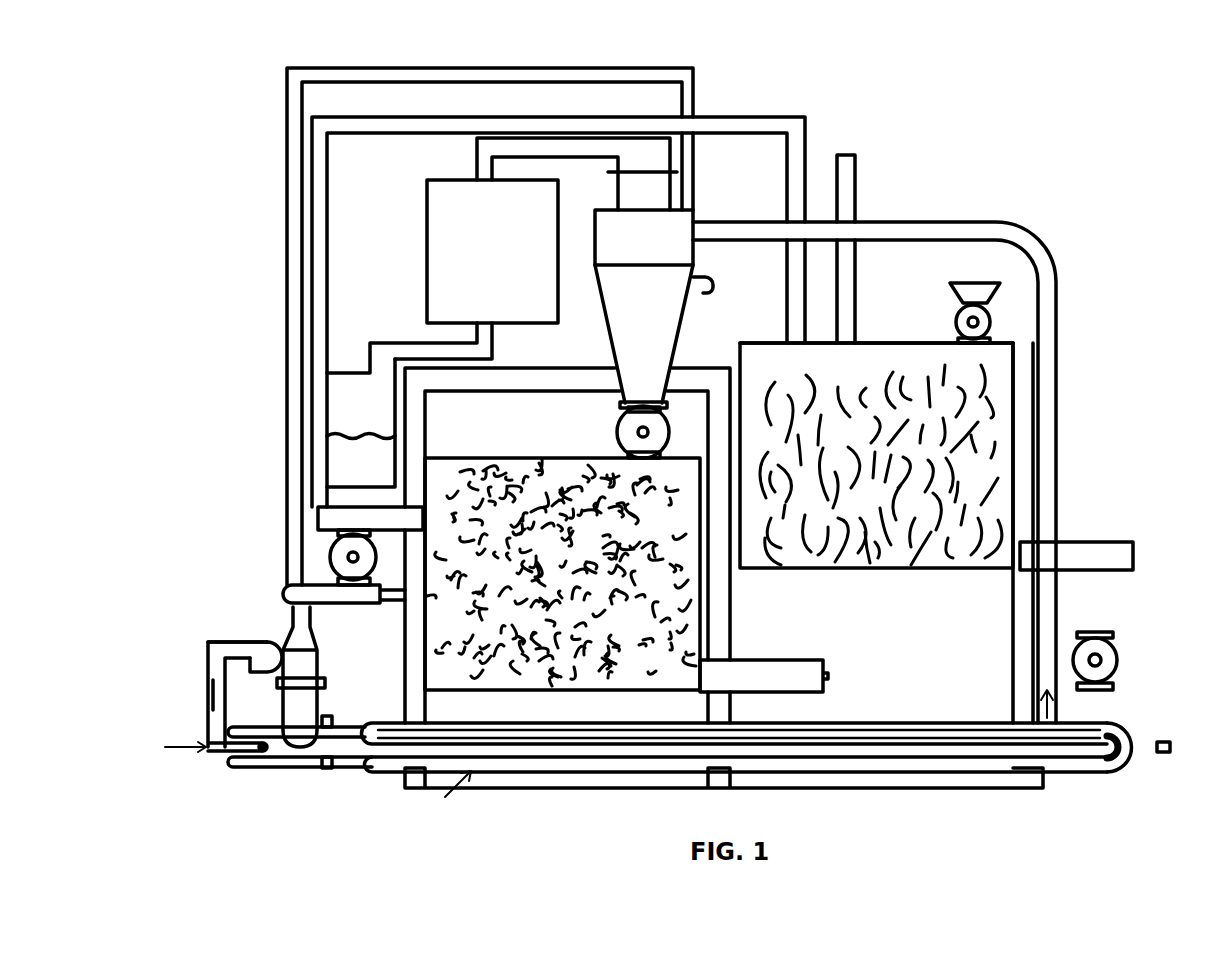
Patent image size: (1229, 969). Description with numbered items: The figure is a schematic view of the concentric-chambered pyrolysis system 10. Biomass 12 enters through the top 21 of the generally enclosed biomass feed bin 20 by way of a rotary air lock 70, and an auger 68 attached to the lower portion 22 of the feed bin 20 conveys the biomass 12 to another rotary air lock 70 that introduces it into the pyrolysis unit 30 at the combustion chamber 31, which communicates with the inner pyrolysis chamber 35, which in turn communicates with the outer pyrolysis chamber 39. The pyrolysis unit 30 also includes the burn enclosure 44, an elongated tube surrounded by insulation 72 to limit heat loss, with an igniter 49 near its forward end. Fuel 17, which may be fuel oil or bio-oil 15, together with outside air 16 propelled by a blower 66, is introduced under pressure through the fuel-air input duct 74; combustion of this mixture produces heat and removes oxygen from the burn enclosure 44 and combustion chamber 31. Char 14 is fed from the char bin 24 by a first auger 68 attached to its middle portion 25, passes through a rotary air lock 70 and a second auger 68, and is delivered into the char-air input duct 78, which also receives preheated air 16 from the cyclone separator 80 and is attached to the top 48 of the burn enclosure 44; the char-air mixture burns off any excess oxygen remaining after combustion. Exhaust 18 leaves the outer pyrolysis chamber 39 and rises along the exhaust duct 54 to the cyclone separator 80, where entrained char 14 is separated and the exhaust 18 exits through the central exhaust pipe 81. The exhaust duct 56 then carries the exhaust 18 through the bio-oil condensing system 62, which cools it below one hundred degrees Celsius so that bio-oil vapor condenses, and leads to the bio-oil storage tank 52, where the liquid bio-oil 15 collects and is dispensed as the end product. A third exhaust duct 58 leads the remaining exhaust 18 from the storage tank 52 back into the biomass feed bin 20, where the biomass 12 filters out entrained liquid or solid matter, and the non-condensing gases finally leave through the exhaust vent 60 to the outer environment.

The concentric-chambered pyrolysis system 10 is at (1002, 158).
The biomass 12 is at (862, 548).
The char 14 is at (618, 608).
The bio-oil 15 is at (327, 452).
The air 16 is at (208, 702).
The fuel 17 is at (182, 752).
The exhaust 18 is at (1032, 680).
The biomass feed bin 20 is at (997, 367).
The top of the feed bin 21 is at (878, 340).
The lower portion of the biomass feed bin 22 is at (1015, 525).
The char bin 24 is at (476, 468).
The middle portion of the char bin 25 is at (422, 607).
The pyrolysis unit 30 is at (441, 805).
The combustion chamber 31 is at (822, 745).
The inner pyrolysis chamber 35 is at (862, 740).
The outer pyrolysis chamber 39 is at (940, 735).
The burn enclosure 44 is at (318, 755).
The top of the burn enclosure 48 is at (333, 722).
The igniter 49 is at (261, 752).
The bio-oil storage tank 52 is at (368, 412).
The exhaust duct 54 is at (1000, 222).
The exhaust duct 56 is at (587, 162).
The third exhaust duct 58 is at (328, 196).
The exhaust vent 60 is at (857, 172).
The bio-oil condensing system 62 is at (510, 270).
The blower 66 is at (722, 292).
The auger 68 is at (320, 520).
The rotary air lock 70 is at (616, 433).
The insulation 72 is at (1158, 730).
The fuel-air input duct 74 is at (210, 678).
The char-air input duct 78 is at (698, 90).
The cyclone separator 80 is at (660, 333).
The central exhaust pipe 81 is at (651, 203).